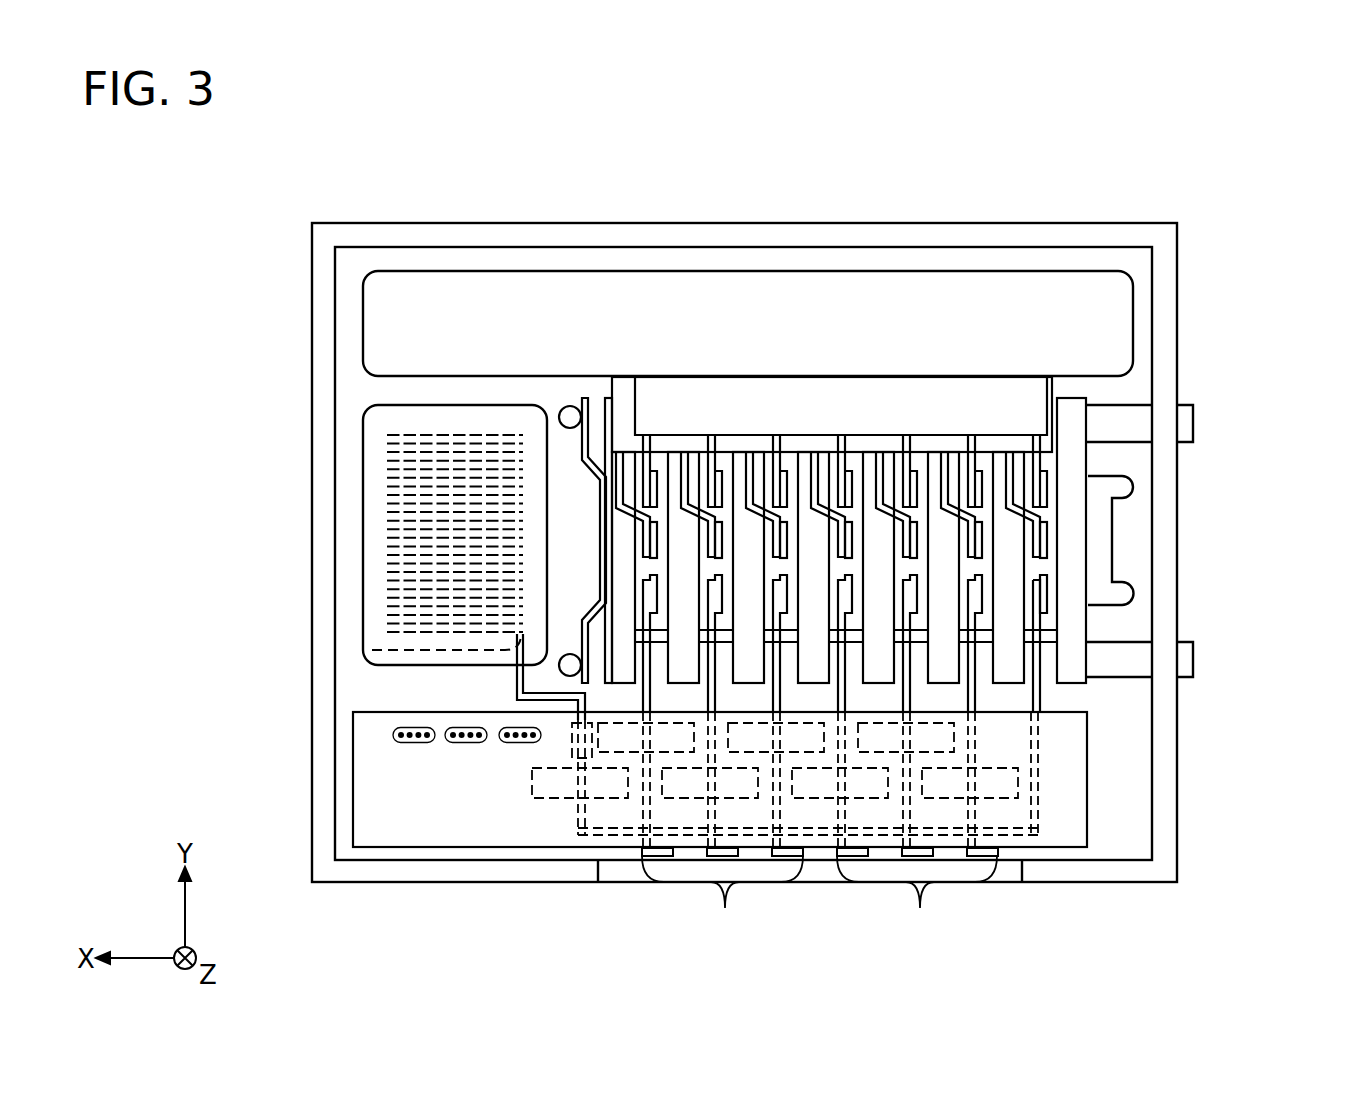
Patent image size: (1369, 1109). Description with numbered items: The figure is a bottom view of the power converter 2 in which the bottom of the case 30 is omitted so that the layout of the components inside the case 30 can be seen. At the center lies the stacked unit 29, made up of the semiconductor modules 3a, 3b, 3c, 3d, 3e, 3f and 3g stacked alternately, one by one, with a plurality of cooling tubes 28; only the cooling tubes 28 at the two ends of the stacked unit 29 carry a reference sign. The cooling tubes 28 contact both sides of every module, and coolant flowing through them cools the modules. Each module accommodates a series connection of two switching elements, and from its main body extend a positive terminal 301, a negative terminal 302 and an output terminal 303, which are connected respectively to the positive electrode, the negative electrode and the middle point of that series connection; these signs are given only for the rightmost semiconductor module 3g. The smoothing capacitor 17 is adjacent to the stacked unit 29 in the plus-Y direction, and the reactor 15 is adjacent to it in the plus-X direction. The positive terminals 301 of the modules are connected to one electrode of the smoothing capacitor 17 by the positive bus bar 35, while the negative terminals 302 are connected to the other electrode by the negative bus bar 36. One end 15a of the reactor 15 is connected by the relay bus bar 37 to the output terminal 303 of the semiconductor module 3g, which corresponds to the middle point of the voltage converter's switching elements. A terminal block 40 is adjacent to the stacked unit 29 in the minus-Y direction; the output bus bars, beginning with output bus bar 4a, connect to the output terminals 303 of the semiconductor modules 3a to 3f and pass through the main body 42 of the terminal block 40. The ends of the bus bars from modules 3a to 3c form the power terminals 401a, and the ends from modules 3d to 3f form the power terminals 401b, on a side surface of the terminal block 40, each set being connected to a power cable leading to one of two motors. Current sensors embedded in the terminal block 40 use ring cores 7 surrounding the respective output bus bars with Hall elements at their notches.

The power converter 2 is at (300, 221).
The smoothing capacitor 17 is at (452, 288).
The stacked unit 29 is at (579, 518).
The cooling tube 28 is at (606, 412).
The semiconductor module 3f is at (660, 465).
The semiconductor module 3e is at (725, 465).
The semiconductor module 3d is at (790, 465).
The semiconductor module 3c is at (855, 465).
The semiconductor module 3b is at (920, 465).
The semiconductor module 3a is at (985, 465).
The case 30 is at (1174, 271).
The reactor 15 is at (393, 472).
The one end of the reactor 15a is at (372, 650).
The relay bus bar 37 is at (517, 683).
The positive bus bar 35 is at (1040, 464).
The positive terminal 301 is at (1044, 491).
The negative bus bar 36 is at (1033, 511).
The negative terminal 302 is at (1044, 540).
The output terminal 303 is at (1044, 590).
The semiconductor module 3g is at (1047, 620).
The output bus bar 4a is at (628, 692).
The terminal block 40 is at (1105, 798).
The ring core 7 is at (536, 787).
The power terminal 401b is at (722, 903).
The power terminal 401a is at (917, 903).
The main body 42 is at (1057, 835).